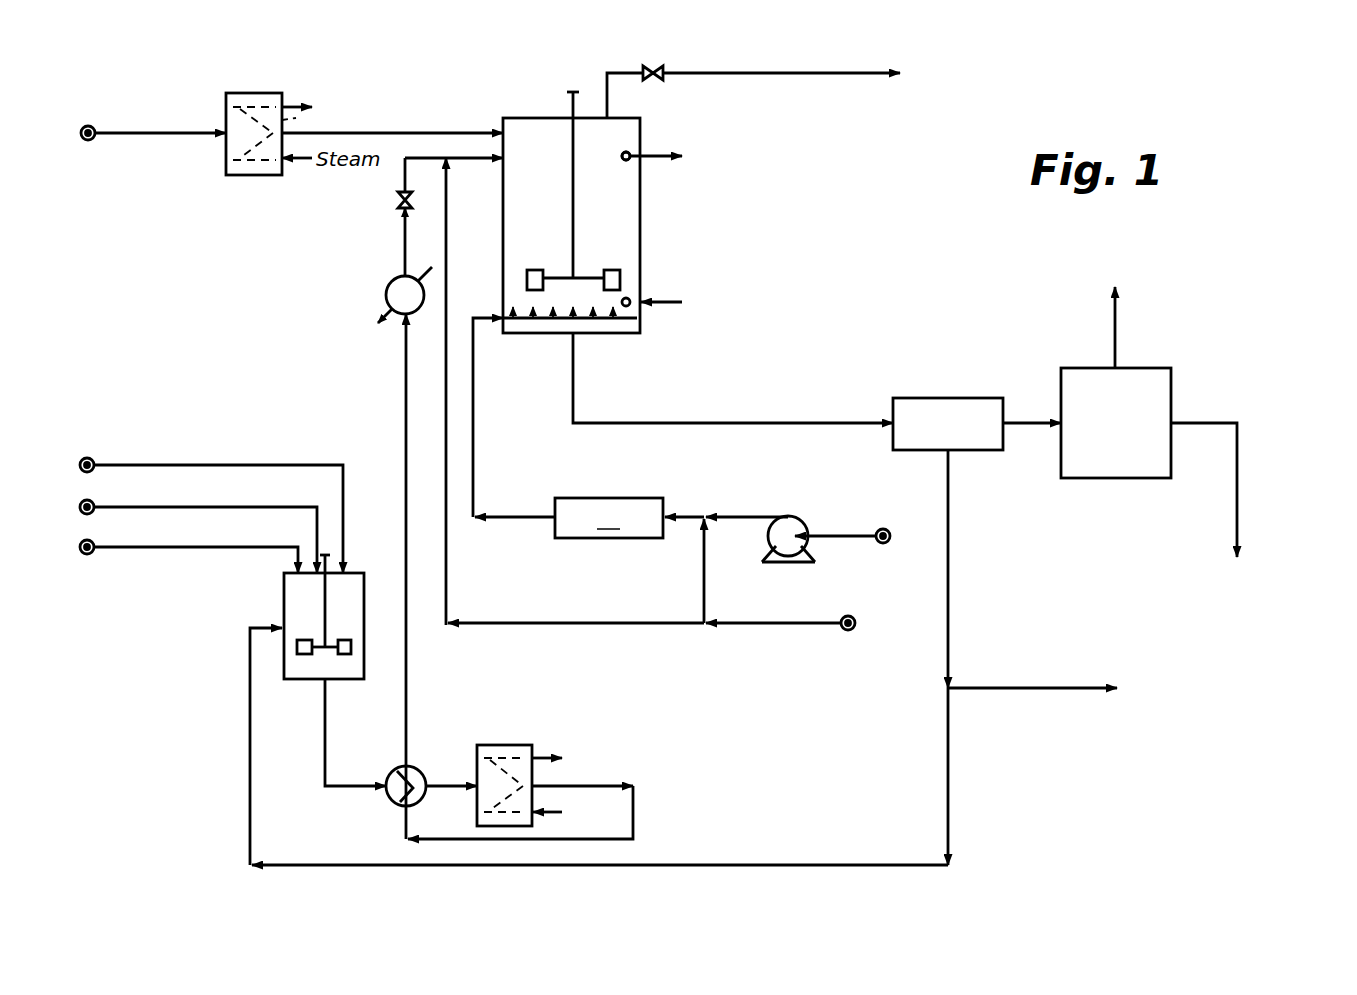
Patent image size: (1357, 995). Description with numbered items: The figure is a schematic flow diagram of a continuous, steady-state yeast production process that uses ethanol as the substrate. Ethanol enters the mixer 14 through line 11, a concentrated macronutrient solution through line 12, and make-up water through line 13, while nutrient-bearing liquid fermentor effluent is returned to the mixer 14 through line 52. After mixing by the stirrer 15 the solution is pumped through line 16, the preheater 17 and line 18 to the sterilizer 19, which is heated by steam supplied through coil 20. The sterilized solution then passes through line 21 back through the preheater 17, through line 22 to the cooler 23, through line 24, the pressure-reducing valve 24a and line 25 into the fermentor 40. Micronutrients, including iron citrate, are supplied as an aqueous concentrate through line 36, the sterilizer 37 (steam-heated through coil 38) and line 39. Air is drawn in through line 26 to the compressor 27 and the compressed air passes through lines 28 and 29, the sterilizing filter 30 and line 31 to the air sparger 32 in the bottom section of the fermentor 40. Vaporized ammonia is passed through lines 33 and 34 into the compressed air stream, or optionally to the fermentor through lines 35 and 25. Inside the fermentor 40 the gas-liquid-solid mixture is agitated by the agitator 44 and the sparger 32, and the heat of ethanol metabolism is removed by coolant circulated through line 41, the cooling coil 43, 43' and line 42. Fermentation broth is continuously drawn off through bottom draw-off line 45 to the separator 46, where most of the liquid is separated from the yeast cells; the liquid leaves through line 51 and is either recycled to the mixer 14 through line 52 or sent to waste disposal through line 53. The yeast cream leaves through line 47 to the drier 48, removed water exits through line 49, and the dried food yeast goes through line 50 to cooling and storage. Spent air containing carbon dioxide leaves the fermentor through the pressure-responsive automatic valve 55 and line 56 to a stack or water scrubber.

The line 11 is at (225, 465).
The line 12 is at (262, 507).
The line 13 is at (255, 547).
The mixer 14 is at (282, 600).
The stirrer 15 is at (333, 640).
The line 16 is at (325, 770).
The preheater 17 is at (390, 801).
The line 18 is at (441, 786).
The sterilizer 19 is at (509, 745).
The coil 20 is at (533, 771).
The line 21 is at (633, 802).
The line 22 is at (406, 413).
The cooler 23 is at (386, 295).
The line 24 is at (404, 254).
The pressure-reducing valve 24a is at (397, 193).
The line 25 is at (462, 158).
The line 26 is at (833, 536).
The compressor 27 is at (806, 552).
The line 28 is at (752, 517).
The line 29 is at (690, 517).
The sterilizing filter 30 is at (600, 498).
The line 31 is at (473, 397).
The air sparger 32 is at (607, 318).
The line 33 is at (545, 623).
The line 34 is at (704, 568).
The line 35 is at (446, 222).
The line 36 is at (140, 133).
The sterilizer 37 is at (244, 93).
The coil 38 is at (296, 118).
The line 39 is at (384, 133).
The fermentor 40 is at (644, 217).
The line 41 is at (672, 302).
The line 42 is at (655, 156).
The cooling coil 43 is at (649, 272).
The cooling coil 43' is at (607, 173).
The agitator 44 is at (558, 270).
The bottom draw-off line 45 is at (672, 423).
The separator 46 is at (937, 396).
The line 47 is at (1025, 423).
The drier 48 is at (1123, 438).
The line 49 is at (1117, 338).
The line 50 is at (1212, 423).
The line 51 is at (950, 546).
The line 52 is at (950, 800).
The line 53 is at (1013, 688).
The pressure-responsive automatic valve 55 is at (648, 68).
The line 56 is at (742, 73).